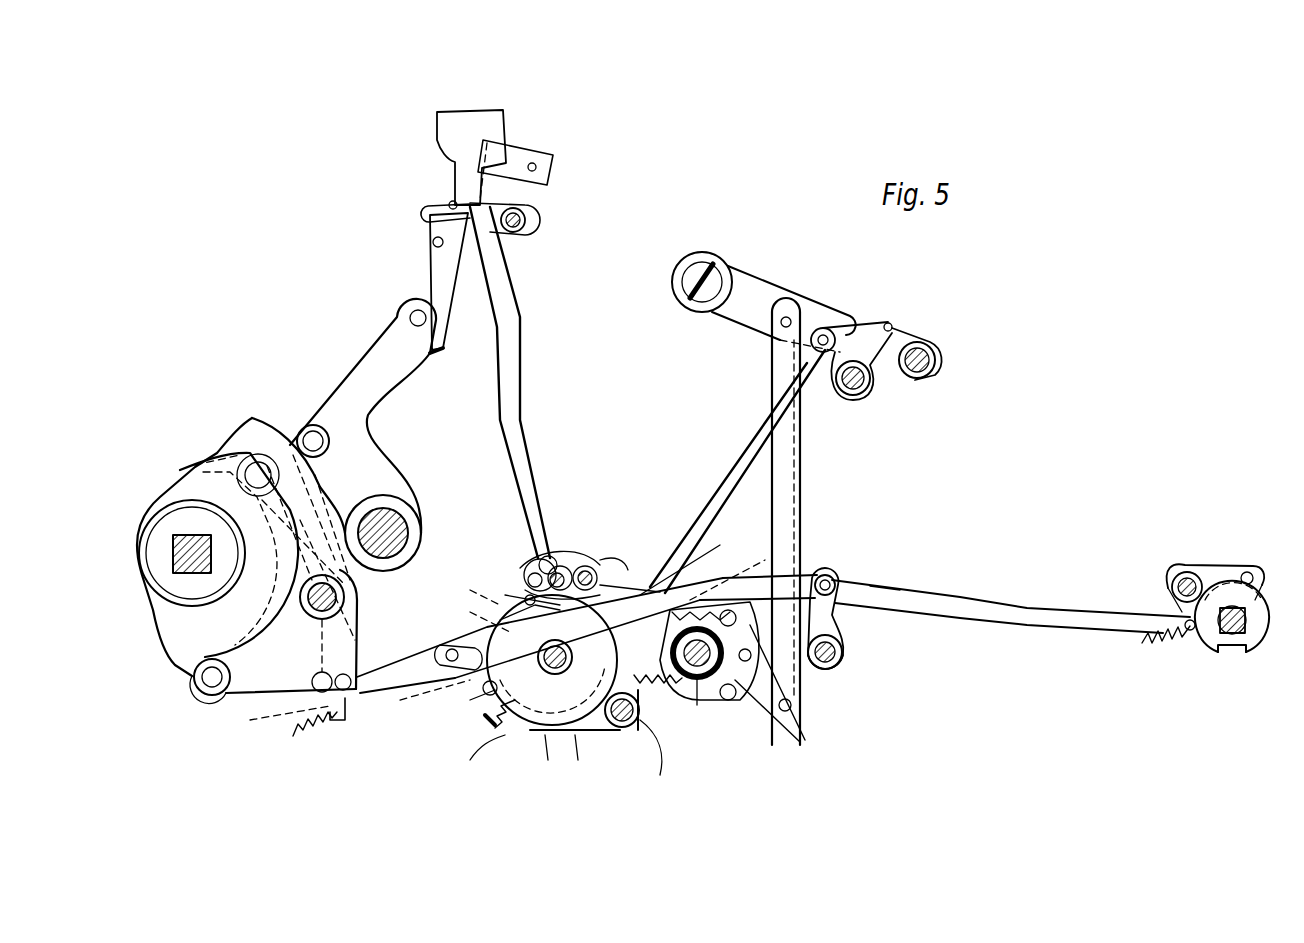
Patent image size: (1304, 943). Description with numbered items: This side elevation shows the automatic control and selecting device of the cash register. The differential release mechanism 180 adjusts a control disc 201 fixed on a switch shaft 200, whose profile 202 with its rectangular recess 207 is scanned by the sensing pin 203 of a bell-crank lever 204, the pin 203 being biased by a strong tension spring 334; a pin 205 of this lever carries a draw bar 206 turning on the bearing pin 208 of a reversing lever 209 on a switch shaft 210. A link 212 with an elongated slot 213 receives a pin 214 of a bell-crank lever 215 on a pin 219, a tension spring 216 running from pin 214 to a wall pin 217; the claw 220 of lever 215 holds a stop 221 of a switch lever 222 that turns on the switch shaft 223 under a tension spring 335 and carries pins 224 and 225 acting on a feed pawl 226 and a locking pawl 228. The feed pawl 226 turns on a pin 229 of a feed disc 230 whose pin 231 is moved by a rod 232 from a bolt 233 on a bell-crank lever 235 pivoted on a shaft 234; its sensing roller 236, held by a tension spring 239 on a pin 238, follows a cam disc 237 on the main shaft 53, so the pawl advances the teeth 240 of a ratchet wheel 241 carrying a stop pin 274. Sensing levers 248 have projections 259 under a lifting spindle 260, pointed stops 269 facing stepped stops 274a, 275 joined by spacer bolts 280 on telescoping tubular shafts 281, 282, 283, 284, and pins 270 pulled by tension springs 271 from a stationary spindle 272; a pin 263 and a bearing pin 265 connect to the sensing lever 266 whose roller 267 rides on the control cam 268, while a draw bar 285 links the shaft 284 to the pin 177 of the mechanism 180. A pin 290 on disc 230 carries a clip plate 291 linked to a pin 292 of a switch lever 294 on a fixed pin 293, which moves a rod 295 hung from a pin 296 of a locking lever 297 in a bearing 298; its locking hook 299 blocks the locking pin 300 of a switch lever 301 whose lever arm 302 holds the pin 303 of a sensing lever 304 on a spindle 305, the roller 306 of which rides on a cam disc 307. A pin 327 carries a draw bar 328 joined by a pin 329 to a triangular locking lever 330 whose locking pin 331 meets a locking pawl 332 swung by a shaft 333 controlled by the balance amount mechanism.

The main shaft 53 is at (190, 580).
The pin 177 is at (795, 320).
The differential control or release mechanism 180 is at (699, 302).
The switch shaft 200 is at (1242, 630).
The control disc 201 is at (1213, 652).
The profile 202 is at (1180, 600).
The scanning or sensing pin 203 is at (1247, 572).
The bell-crank lever 204 is at (1205, 568).
The pin 205 is at (1188, 631).
The draw bar 206 is at (1070, 622).
The rectangular recess 207 is at (1232, 656).
The bearing pin 208 is at (880, 589).
The reversing lever 209 is at (833, 615).
The switch shaft 210 is at (845, 652).
The link 212 is at (772, 552).
The elongated slot 213 is at (580, 572).
The pin 214 is at (640, 545).
The bell-crank lever 215 is at (560, 568).
The tension spring 216 is at (655, 540).
The pin 217 is at (600, 582).
The pin 219 is at (585, 560).
The claw 220 is at (522, 596).
The stop 221 is at (525, 582).
The switch lever 222 is at (470, 700).
The switch shaft 223 is at (480, 716).
The pin 224 is at (520, 608).
The pin 225 is at (495, 730).
The feed pawl 226 is at (446, 647).
The locking pawl 228 is at (483, 690).
The pin 229 is at (440, 705).
The feed disc 230 is at (586, 616).
The pin 231 is at (686, 561).
The rod 232 is at (372, 655).
The bolt 233 is at (343, 688).
The shaft 234 is at (345, 594).
The bell-crank lever 235 is at (344, 600).
The scanning or sensing roller 236 is at (200, 700).
The cam disc 237 is at (200, 688).
The pin 238 is at (330, 712).
The tension spring 239 is at (292, 740).
The teeth 240 is at (474, 604).
The ratchet wheel 241 is at (527, 725).
The scanning or sensing lever 248 is at (607, 737).
The nosepieces or projections 259 is at (662, 688).
The lifting spindle 260 is at (637, 722).
The pin 263 is at (668, 655).
The bearing pin 265 is at (252, 722).
The scanning or sensing lever 266 is at (300, 650).
The sensing roller 267 is at (270, 480).
The control cam 268 is at (196, 466).
The pointed stops 269 is at (620, 628).
The pins 270 is at (578, 758).
The tension springs 271 is at (663, 757).
The stationary spindle 272 is at (697, 705).
The stop pin 274 is at (818, 708).
The stepped stop 274a is at (825, 575).
The stepped stop 275 is at (768, 580).
The spacer bolts 280 is at (838, 668).
The tubular shaft 281 is at (732, 700).
The tubular shaft 282 is at (782, 712).
The link 283 is at (740, 705).
The telescoping tubular shaft 284 is at (781, 717).
The draw bar 285 is at (801, 527).
The pin 290 is at (468, 579).
The clip plate or strap 291 is at (530, 575).
The pin 292 is at (535, 568).
The fixed pin 293 is at (578, 565).
The switch lever 294 is at (552, 555).
The rod 295 is at (517, 466).
The pin 296 is at (527, 222).
The locking lever 297 is at (498, 208).
The bearing 298 is at (530, 195).
The locking hook 299 is at (423, 213).
The locking pin 300 is at (448, 205).
The switch lever 301 is at (437, 262).
The lever arm 302 is at (444, 345).
The pin 303 is at (410, 318).
The scanning or sensing lever 304 is at (375, 438).
The spindle 305 is at (408, 530).
The scanning or sensing roller 306 is at (315, 426).
The cam disc 307 is at (258, 415).
The pin 327 is at (546, 758).
The draw bar 328 is at (718, 480).
The pin 329 is at (833, 331).
The triangular locking lever 330 is at (872, 374).
The locking pin 331 is at (891, 324).
The locking pawl 332 is at (915, 342).
The shaft 333 is at (935, 357).
The tension spring 334 is at (1148, 645).
The tension spring 335 is at (486, 760).